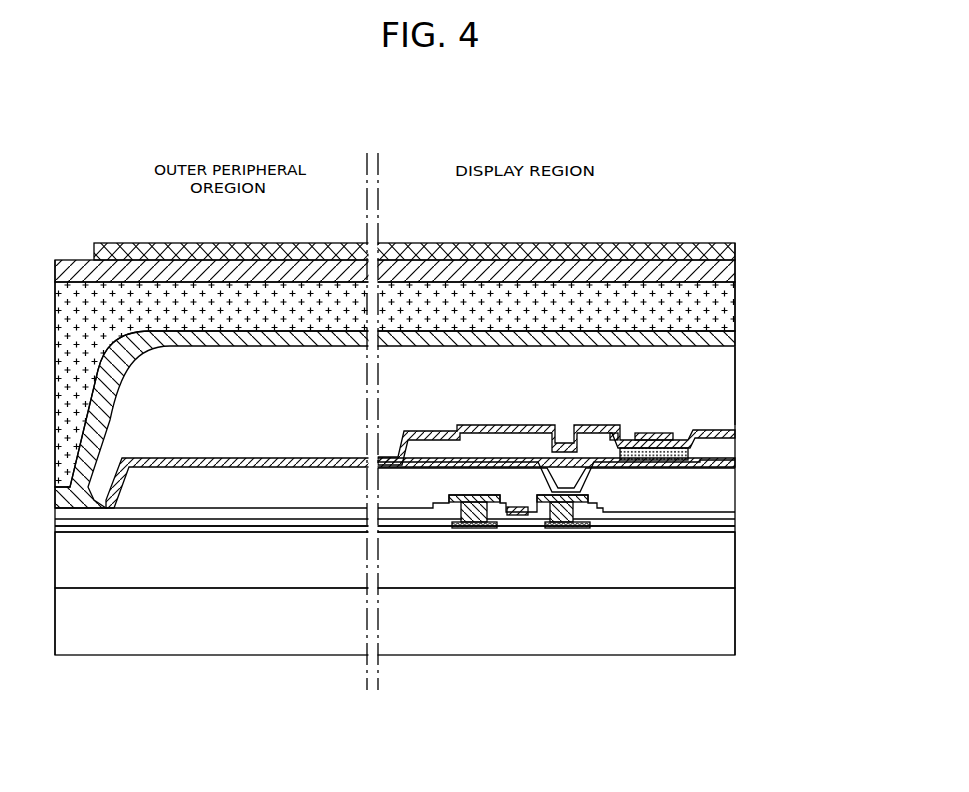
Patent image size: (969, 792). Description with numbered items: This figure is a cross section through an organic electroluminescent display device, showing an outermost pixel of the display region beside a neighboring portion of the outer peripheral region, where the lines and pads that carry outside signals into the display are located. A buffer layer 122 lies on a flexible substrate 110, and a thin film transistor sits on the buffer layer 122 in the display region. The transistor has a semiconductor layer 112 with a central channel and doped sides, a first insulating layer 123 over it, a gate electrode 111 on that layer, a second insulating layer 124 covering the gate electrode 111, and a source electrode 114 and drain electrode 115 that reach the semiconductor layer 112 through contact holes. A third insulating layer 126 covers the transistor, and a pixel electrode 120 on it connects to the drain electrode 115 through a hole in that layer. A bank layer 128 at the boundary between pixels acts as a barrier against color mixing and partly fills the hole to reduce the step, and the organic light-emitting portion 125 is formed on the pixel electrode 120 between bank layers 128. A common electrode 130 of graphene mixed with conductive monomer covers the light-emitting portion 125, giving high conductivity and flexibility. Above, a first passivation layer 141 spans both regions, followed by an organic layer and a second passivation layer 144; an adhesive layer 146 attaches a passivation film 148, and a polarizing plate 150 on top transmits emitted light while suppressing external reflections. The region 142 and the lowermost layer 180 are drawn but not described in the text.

The substrate 110 is at (722, 581).
The gate electrode 111 is at (523, 514).
The semiconductor layer 112 is at (506, 532).
The source electrode 114 is at (462, 508).
The drain electrode 115 is at (578, 505).
The pixel electrode 120 is at (490, 462).
The buffer layer 122 is at (735, 536).
The first insulating layer 123 is at (735, 524).
The second insulating layer 124 is at (722, 512).
The organic light-emitting portion 125 is at (646, 447).
The third insulating layer 126 is at (722, 484).
The bank layer 128 is at (722, 452).
The common electrode 130 is at (525, 425).
The first passivation layer 141 is at (690, 430).
The filler layer 142 is at (722, 378).
The second passivation layer 144 is at (722, 345).
The adhesive layer 146 is at (722, 307).
The passivation film 148 is at (722, 275).
The polarizing plate 150 is at (722, 249).
The protective film 180 is at (722, 627).